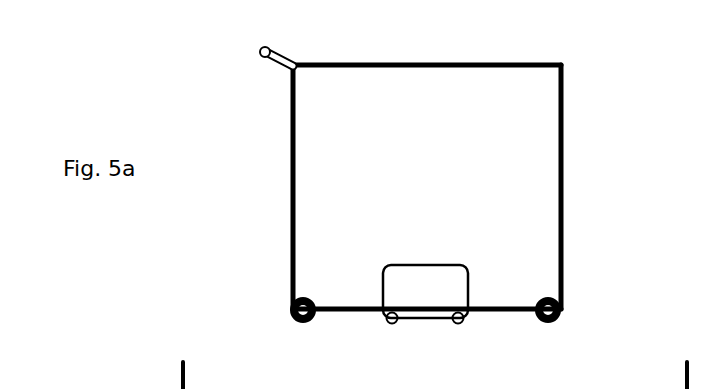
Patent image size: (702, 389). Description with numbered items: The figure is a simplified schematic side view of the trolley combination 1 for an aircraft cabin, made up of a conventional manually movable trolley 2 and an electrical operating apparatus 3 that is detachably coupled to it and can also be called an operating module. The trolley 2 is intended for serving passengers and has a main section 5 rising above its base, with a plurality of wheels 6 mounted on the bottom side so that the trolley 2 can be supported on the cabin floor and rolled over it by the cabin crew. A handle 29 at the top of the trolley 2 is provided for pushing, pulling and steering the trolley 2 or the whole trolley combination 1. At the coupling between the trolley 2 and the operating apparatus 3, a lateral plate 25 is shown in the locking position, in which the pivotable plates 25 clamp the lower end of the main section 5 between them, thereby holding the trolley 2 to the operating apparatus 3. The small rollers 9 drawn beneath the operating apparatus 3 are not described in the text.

The trolley combination 1 is at (605, 87).
The trolley 2 is at (585, 172).
The electrical operating apparatus 3 is at (378, 323).
The main section 5 is at (550, 254).
The wheels 6 is at (287, 317).
The roller 9 is at (397, 323).
The lateral plate 25 is at (438, 278).
The handle 29 is at (268, 48).